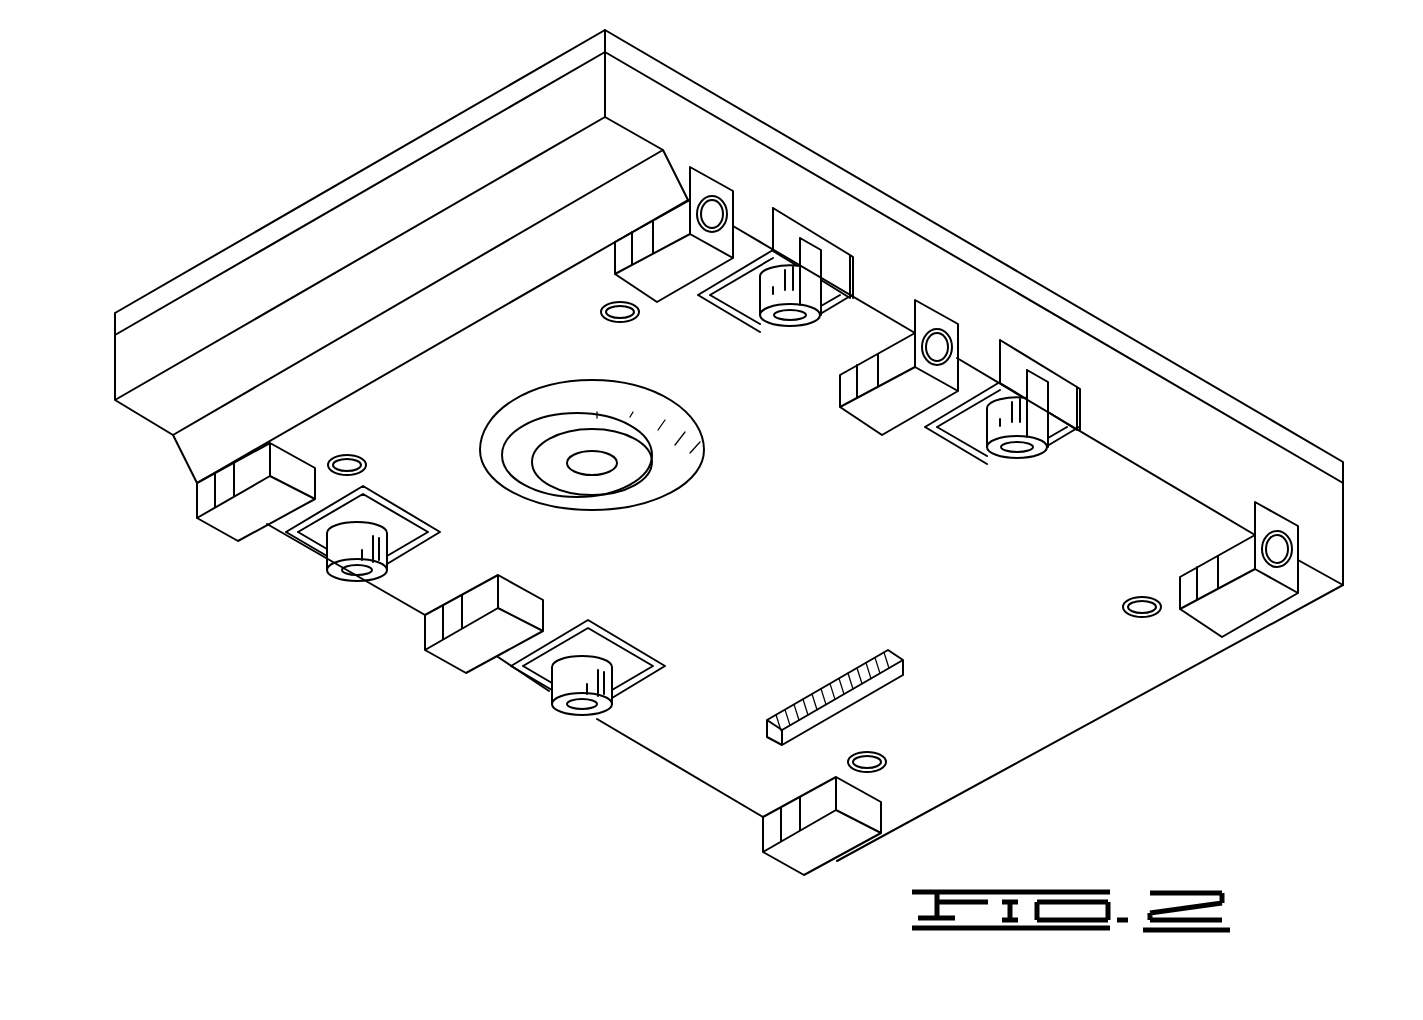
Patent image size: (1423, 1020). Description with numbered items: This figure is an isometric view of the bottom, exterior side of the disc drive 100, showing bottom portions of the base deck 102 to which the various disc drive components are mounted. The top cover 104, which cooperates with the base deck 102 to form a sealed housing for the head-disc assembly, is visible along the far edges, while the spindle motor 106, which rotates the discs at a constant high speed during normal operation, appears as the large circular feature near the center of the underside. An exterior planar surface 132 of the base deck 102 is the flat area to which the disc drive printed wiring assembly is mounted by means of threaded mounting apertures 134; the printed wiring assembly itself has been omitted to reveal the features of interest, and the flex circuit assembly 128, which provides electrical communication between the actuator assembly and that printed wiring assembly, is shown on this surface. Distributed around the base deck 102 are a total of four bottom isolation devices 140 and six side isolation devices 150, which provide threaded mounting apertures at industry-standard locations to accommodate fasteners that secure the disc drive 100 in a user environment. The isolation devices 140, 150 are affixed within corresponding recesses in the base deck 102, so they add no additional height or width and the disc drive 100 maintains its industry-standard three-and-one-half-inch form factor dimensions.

The disc drive 100 is at (766, 445).
The base deck 102 is at (807, 530).
The top cover 104 is at (1140, 354).
The spindle motor 106 is at (660, 483).
The flex circuit assembly 128 is at (788, 736).
The exterior planar surface 132 is at (1058, 708).
The threaded mounting apertures 134 is at (636, 322).
The bottom isolation devices 140 is at (779, 372).
The side isolation devices 150 is at (722, 158).